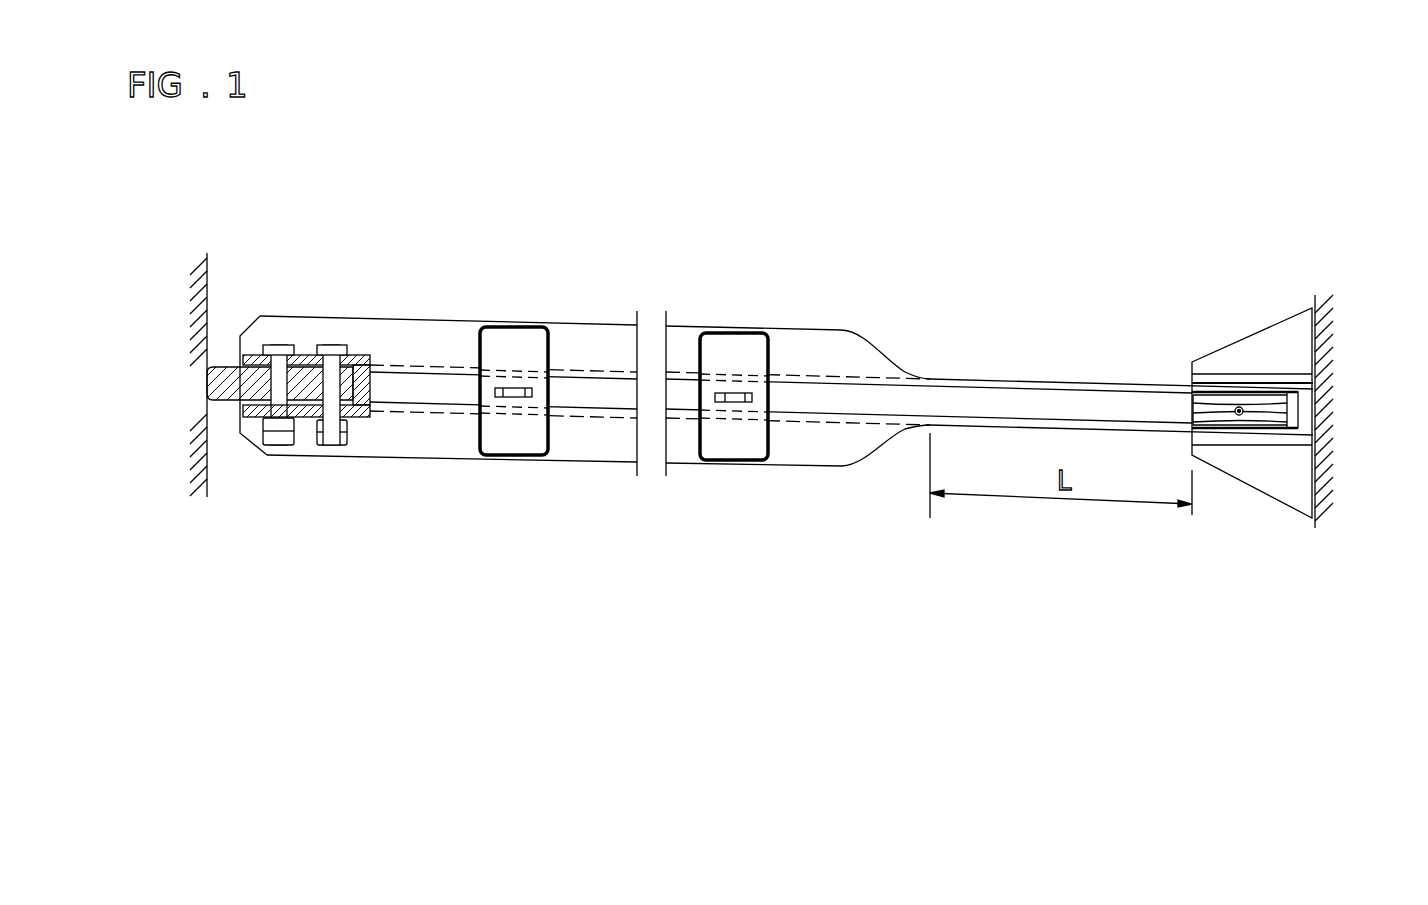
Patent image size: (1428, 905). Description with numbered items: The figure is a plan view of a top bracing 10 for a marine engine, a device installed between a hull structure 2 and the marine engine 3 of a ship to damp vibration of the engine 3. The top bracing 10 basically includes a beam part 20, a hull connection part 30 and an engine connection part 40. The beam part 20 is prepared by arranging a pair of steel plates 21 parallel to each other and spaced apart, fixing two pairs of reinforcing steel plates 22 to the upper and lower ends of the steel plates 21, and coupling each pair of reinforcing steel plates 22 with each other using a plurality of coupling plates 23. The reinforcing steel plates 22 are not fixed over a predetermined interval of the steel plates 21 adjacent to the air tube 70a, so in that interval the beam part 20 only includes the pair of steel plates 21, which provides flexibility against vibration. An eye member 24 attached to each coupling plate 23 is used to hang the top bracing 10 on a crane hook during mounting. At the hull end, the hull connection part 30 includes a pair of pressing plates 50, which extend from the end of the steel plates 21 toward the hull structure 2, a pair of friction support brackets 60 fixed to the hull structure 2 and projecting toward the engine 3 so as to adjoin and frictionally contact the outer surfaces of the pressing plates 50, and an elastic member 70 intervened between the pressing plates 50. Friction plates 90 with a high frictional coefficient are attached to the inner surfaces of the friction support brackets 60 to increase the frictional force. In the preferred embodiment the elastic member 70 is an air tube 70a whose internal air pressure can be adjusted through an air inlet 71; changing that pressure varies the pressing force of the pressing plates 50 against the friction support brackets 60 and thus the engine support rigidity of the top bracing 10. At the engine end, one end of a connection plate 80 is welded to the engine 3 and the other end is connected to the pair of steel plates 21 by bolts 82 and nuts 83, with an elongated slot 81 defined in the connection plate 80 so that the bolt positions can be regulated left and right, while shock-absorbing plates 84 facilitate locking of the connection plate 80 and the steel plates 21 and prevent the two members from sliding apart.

The hull structure 2 is at (1328, 351).
The marine engine 3 is at (200, 316).
The top bracing 10 is at (1023, 276).
The beam part 20 is at (595, 390).
The steel plates 21 is at (968, 379).
The reinforcing steel plates 22 is at (808, 330).
The coupling plates 23 is at (480, 340).
The eye member 24 is at (517, 397).
The hull connection part 30 is at (1255, 337).
The engine connection part 40 is at (278, 456).
The pressing plates 50 is at (1248, 390).
The friction support brackets 60 is at (1285, 487).
The elastic member 70 is at (1214, 489).
The air tube 70a is at (1195, 405).
The air inlet 71 is at (1239, 411).
The connection plate 80 is at (230, 403).
The slot 81 is at (298, 357).
The bolts 82 is at (337, 346).
The nuts 83 is at (332, 447).
The shock-absorbing plates 84 is at (362, 357).
The friction plates 90 is at (1222, 436).